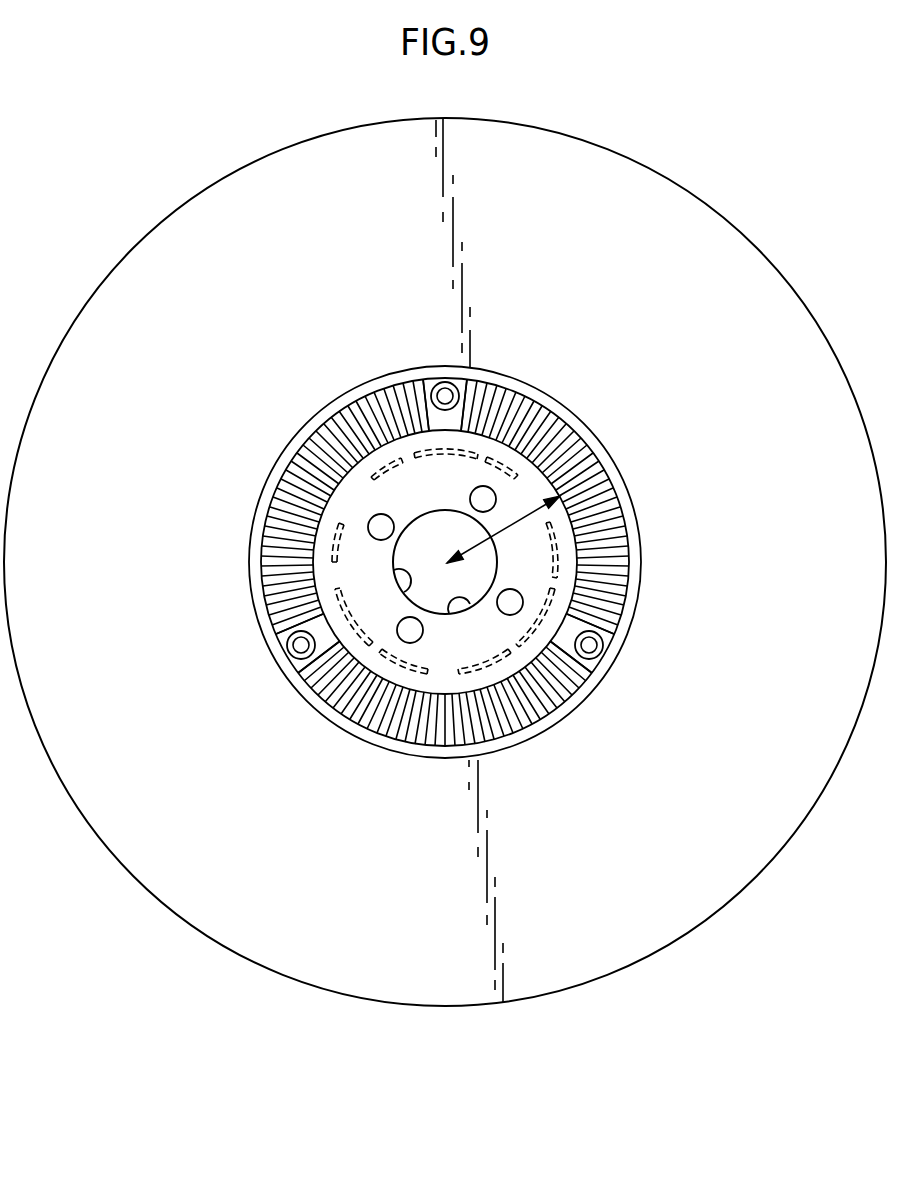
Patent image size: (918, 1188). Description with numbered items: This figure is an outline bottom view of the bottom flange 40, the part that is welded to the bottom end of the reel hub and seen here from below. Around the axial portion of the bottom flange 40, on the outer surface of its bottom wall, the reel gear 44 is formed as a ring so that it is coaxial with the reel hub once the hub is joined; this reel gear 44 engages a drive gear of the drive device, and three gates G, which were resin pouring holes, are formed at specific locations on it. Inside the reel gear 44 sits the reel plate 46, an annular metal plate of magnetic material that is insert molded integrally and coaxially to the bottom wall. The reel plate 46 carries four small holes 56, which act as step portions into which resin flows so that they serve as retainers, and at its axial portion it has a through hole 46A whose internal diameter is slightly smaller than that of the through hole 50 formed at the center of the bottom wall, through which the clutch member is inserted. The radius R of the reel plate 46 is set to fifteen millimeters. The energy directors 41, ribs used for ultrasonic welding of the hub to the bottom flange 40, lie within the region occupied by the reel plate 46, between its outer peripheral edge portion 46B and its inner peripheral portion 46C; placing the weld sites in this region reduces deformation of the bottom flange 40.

The bottom flange 40 is at (763, 292).
The energy director 41 is at (335, 566).
The reel gear 44 is at (600, 510).
The reel plate 46 is at (537, 480).
The through hole 46A is at (509, 651).
The outer peripheral edge portion 46B is at (313, 452).
The inner peripheral portion 46C is at (403, 593).
The through hole 50 is at (462, 607).
The small hole 56 is at (415, 640).
The gate G is at (445, 383).
The radius R is at (505, 528).